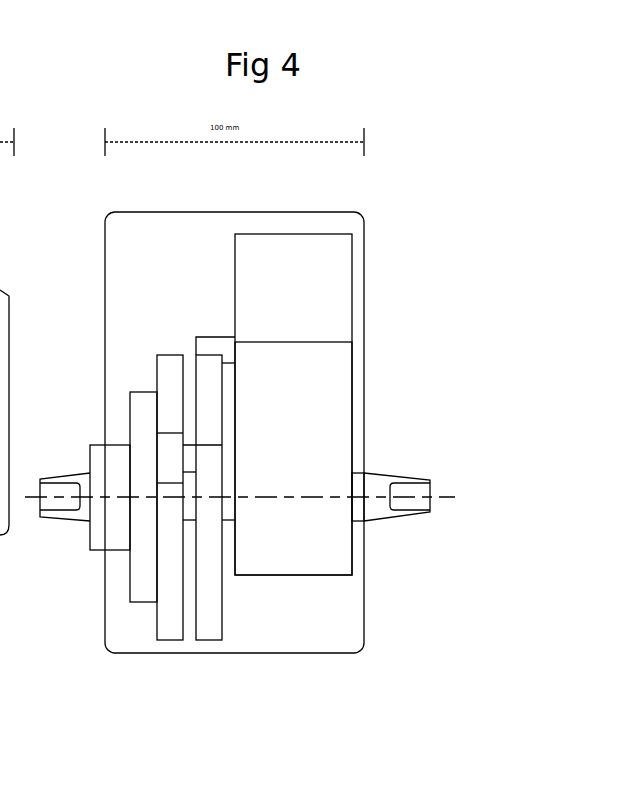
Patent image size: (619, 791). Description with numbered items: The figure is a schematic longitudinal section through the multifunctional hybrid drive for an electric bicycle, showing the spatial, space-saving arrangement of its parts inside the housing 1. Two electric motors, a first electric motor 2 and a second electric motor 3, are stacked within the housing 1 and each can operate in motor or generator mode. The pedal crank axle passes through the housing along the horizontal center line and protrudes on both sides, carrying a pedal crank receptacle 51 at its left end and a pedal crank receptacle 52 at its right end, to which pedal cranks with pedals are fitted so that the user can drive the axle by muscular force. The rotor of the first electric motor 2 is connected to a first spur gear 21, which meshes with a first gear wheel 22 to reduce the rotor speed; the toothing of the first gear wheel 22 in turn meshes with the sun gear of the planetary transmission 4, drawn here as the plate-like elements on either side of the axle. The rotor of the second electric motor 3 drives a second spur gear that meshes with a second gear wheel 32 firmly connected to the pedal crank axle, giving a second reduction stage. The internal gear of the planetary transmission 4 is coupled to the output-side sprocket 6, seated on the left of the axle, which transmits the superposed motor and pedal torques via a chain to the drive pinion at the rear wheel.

The housing 1 is at (151, 279).
The first electric motor 2 is at (322, 380).
The first spur gear 21 is at (172, 455).
The first gear wheel 22 is at (172, 620).
The second electric motor 3 is at (337, 270).
The second gear wheel 32 is at (212, 607).
The planetary transmission 4 is at (142, 587).
The output-side sprocket 6 is at (110, 467).
The pedal crank receptacle 51 is at (60, 505).
The pedal crank receptacle 52 is at (418, 502).